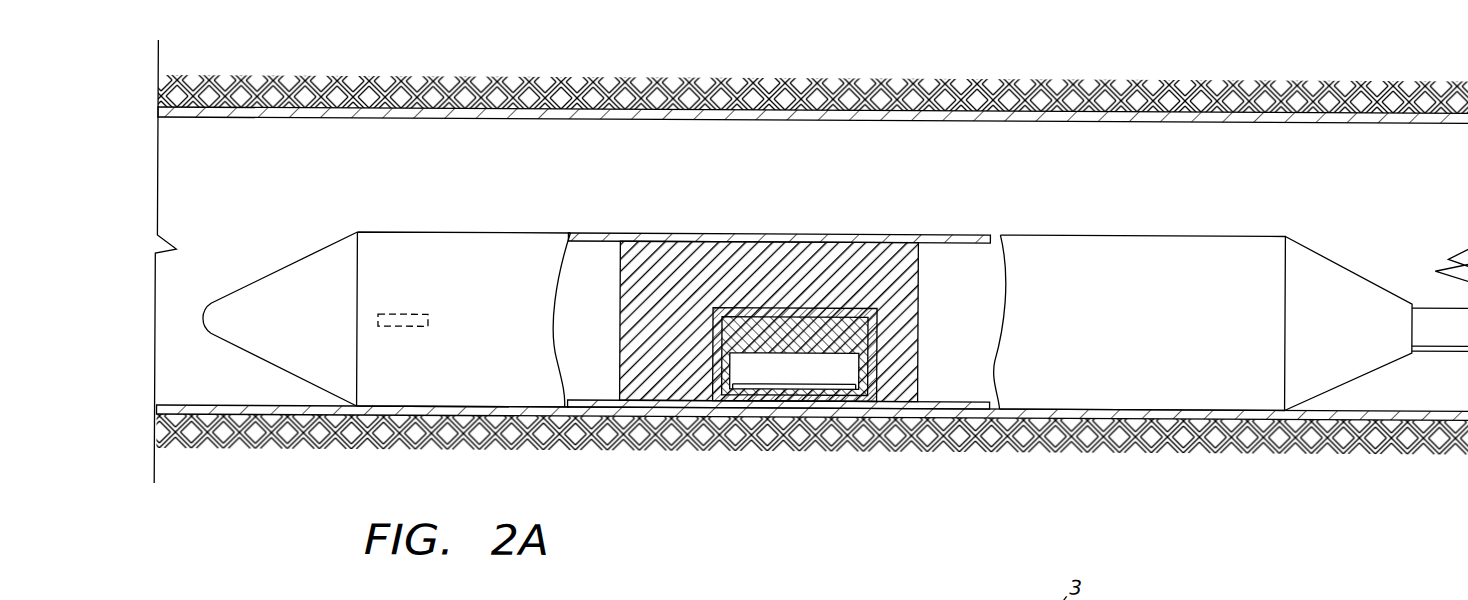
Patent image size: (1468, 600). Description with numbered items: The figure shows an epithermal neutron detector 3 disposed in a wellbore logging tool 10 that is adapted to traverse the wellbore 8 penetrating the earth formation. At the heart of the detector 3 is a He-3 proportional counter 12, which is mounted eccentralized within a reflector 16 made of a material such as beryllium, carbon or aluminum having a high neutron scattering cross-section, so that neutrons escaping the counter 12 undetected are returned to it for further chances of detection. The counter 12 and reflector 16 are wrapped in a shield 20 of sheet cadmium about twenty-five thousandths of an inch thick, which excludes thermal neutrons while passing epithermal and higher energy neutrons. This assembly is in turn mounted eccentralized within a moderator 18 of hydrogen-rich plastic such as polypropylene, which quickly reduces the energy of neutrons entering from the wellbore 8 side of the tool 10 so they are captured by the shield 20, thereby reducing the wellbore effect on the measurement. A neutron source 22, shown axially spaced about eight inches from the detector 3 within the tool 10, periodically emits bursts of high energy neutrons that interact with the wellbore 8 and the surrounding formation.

The detector 3 is at (779, 294).
The wellbore 8 is at (969, 121).
The logging tool 10 is at (835, 289).
The He-3 proportional counter 12 is at (827, 362).
The reflector 16 is at (792, 332).
The moderator 18 is at (692, 282).
The shield 20 is at (754, 308).
The source 22 is at (398, 313).